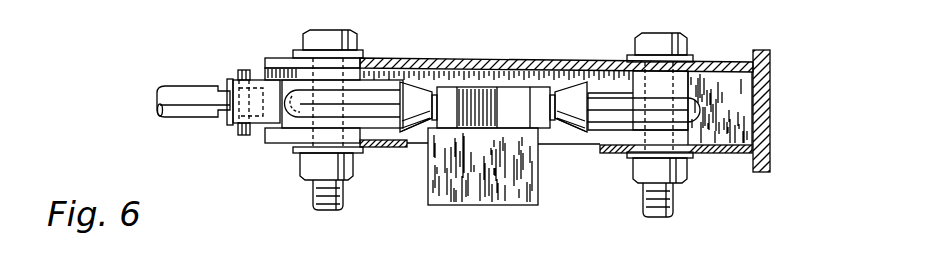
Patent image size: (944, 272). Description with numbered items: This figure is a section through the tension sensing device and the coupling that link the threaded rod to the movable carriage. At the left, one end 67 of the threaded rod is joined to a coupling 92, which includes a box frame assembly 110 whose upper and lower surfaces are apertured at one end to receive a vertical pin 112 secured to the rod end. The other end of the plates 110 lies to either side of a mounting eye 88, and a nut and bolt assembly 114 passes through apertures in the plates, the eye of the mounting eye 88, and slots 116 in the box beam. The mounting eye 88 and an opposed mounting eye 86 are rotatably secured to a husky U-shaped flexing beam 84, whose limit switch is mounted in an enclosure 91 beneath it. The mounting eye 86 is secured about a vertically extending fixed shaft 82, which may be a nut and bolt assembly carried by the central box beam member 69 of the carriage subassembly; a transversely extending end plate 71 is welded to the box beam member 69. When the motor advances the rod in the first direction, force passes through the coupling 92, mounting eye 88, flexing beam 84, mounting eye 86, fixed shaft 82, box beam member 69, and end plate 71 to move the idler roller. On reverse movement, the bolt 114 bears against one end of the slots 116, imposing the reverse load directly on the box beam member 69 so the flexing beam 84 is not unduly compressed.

The one end of the threaded rod 67 is at (192, 86).
The central box beam member 69 is at (505, 58).
The transversely extending plate 71 is at (770, 68).
The fixed shaft 82 is at (673, 128).
The U-shaped flexing beam 84 is at (450, 87).
The mounting eye 86 is at (600, 87).
The mounting eye 88 is at (390, 88).
The enclosure 91 is at (522, 205).
The coupling 92 is at (358, 190).
The box frame assembly 110 is at (260, 79).
The vertical pin 112 is at (243, 70).
The nut and bolt assembly 114 is at (313, 200).
The slots 116 is at (282, 58).